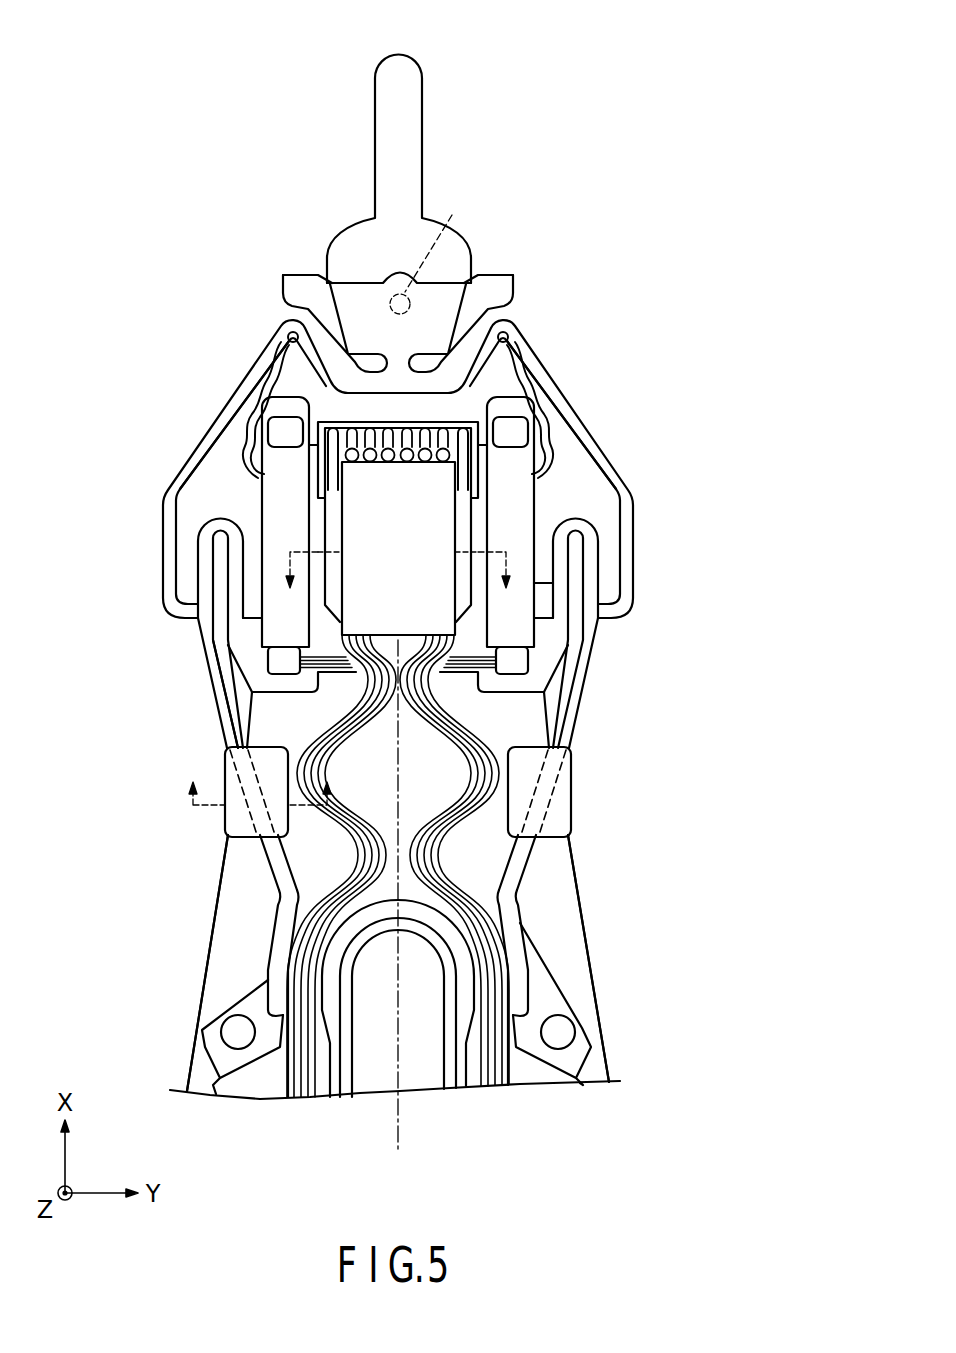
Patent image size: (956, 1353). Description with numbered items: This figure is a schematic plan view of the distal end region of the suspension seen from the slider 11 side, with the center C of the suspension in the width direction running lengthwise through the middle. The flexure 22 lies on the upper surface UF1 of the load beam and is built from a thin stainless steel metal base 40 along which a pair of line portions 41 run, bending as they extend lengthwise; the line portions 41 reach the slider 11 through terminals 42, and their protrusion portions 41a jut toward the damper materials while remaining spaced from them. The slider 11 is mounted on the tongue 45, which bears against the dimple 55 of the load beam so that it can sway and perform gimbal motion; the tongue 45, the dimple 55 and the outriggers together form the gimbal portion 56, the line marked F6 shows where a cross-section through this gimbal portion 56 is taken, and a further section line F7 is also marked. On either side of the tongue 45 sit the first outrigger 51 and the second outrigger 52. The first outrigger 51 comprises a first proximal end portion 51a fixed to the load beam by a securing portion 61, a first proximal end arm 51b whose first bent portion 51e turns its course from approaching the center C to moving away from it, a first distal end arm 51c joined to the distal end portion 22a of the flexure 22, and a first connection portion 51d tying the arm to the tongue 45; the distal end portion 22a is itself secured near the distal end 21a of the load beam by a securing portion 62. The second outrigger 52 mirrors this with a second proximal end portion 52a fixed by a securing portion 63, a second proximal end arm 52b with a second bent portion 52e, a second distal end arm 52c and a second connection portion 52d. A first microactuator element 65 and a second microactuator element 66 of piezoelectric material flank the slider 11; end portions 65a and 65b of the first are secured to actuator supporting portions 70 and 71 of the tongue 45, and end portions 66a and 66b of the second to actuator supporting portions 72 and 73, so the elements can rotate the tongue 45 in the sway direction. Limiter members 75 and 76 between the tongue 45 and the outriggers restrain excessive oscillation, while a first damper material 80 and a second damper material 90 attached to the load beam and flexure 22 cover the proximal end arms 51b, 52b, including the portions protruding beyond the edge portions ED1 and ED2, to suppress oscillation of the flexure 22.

The operation lever knob 21a is at (445, 58).
The distal end portion 22a is at (342, 308).
The securing portion 62 is at (429, 247).
The flexure 22 is at (150, 604).
The actuator supporting portion 71 is at (284, 390).
The actuator supporting portion 73 is at (545, 395).
The limiter member 75 is at (228, 412).
The limiter member 76 is at (560, 445).
The first distal end arm 51c is at (222, 428).
The second distal end arm 52c is at (568, 412).
The end portion 65b is at (282, 462).
The end portion 66b is at (515, 460).
The first microactuator element 65 is at (213, 552).
The second microactuator element 66 is at (583, 562).
The first connection portion 51d is at (213, 530).
The second connection portion 52d is at (585, 530).
The slider 11 is at (332, 524).
The tongue 45 is at (470, 545).
The dimple 55 is at (400, 548).
The gimbal portion 56 is at (552, 585).
The terminals 42 is at (407, 425).
The actuator supporting portion 70 is at (277, 633).
The actuator supporting portion 72 is at (525, 632).
The end portion 65a is at (285, 660).
The end portion 66a is at (532, 657).
The upper surface UF1 is at (200, 735).
The first outrigger 51 is at (196, 895).
The second outrigger 52 is at (603, 895).
The first damper material 80 is at (228, 815).
The second damper material 90 is at (568, 808).
The first proximal end arm 51b is at (275, 864).
The second proximal end arm 52b is at (521, 864).
The first bent portion 51e is at (262, 898).
The second bent portion 52e is at (534, 898).
The edge portion ED1 is at (186, 964).
The edge portion ED2 is at (610, 964).
The first proximal end portion 51a is at (212, 1022).
The second proximal end portion 52a is at (584, 1022).
The securing portion 61 is at (238, 1050).
The securing portion 63 is at (558, 1050).
The metal base 40 is at (331, 1018).
The line portions 41 is at (335, 800).
The protrusion portions 41a is at (292, 745).
The center C is at (397, 909).
The F6-F6 line F6 is at (396, 589).
The view direction of FIG. 7 F7 is at (262, 779).